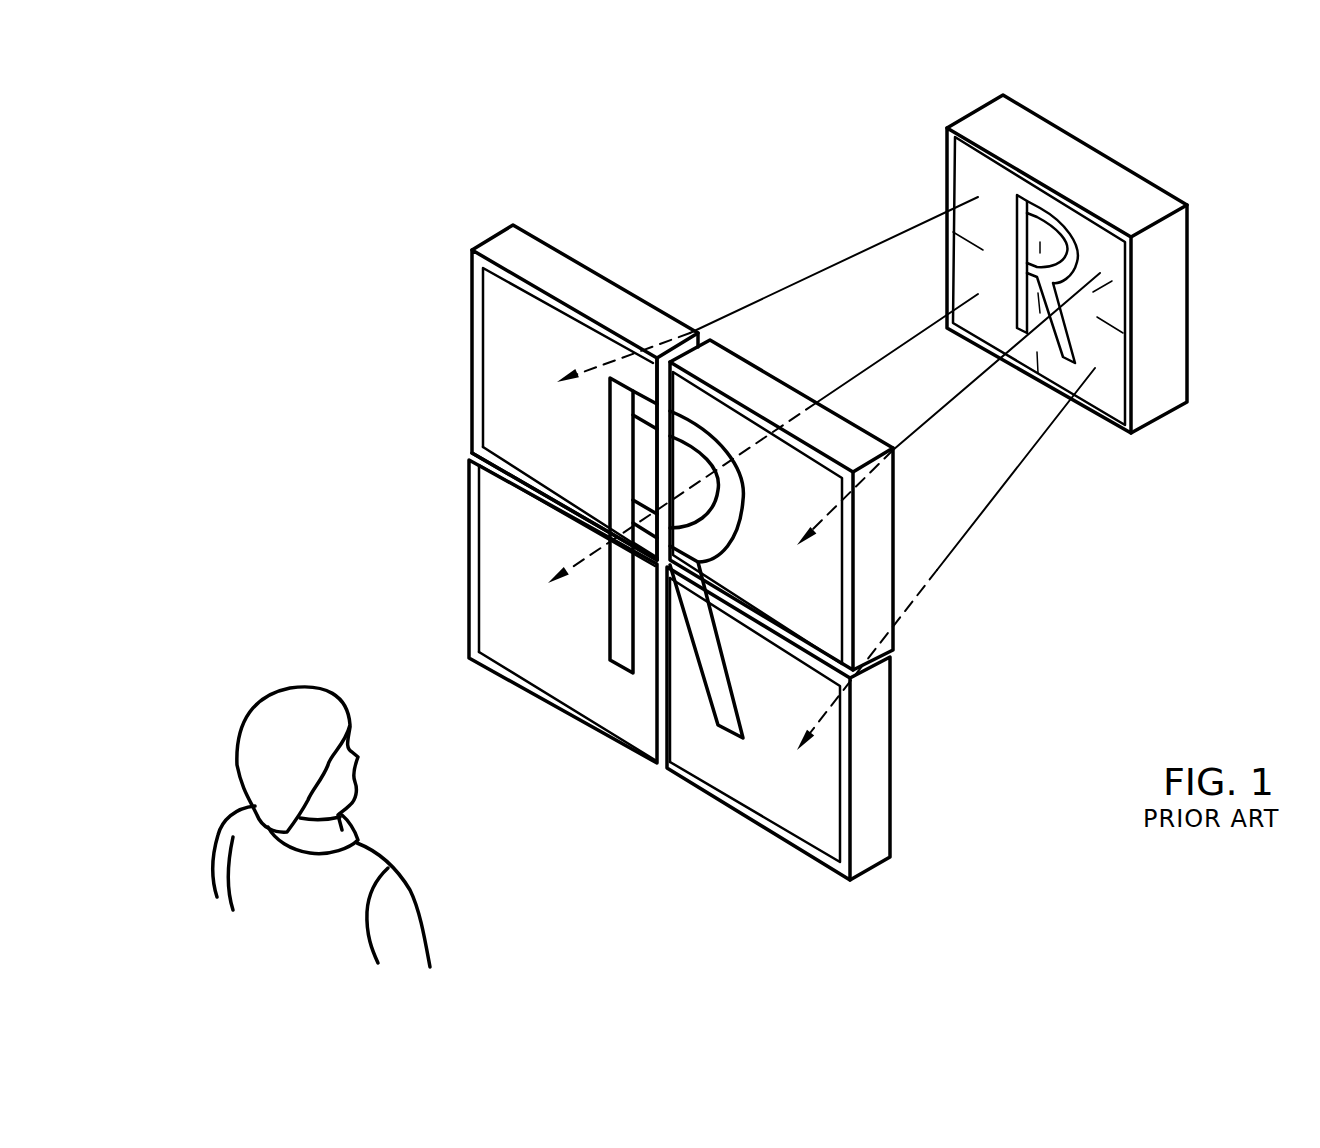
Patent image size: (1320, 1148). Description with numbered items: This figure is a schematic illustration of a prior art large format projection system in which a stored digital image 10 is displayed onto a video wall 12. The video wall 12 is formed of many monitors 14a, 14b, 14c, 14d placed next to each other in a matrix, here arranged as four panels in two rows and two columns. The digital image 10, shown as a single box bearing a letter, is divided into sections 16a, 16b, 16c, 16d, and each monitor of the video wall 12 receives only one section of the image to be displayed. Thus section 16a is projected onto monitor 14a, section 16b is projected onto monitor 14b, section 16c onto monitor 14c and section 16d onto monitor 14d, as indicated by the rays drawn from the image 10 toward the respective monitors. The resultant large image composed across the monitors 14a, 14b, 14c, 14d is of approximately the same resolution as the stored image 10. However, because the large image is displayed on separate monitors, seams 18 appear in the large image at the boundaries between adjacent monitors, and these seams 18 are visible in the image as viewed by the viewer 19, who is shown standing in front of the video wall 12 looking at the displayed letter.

The digital image 10 is at (1173, 480).
The video wall 12 is at (370, 430).
The monitor 14a is at (510, 313).
The monitor 14b is at (818, 587).
The monitor 14c is at (507, 542).
The monitor 14d is at (747, 785).
The section of the image 16a is at (960, 165).
The section of the image 16b is at (1088, 232).
The section of the image 16c is at (950, 265).
The section of the image 16d is at (1100, 400).
The seams 18 is at (663, 382).
The viewer 19 is at (243, 852).